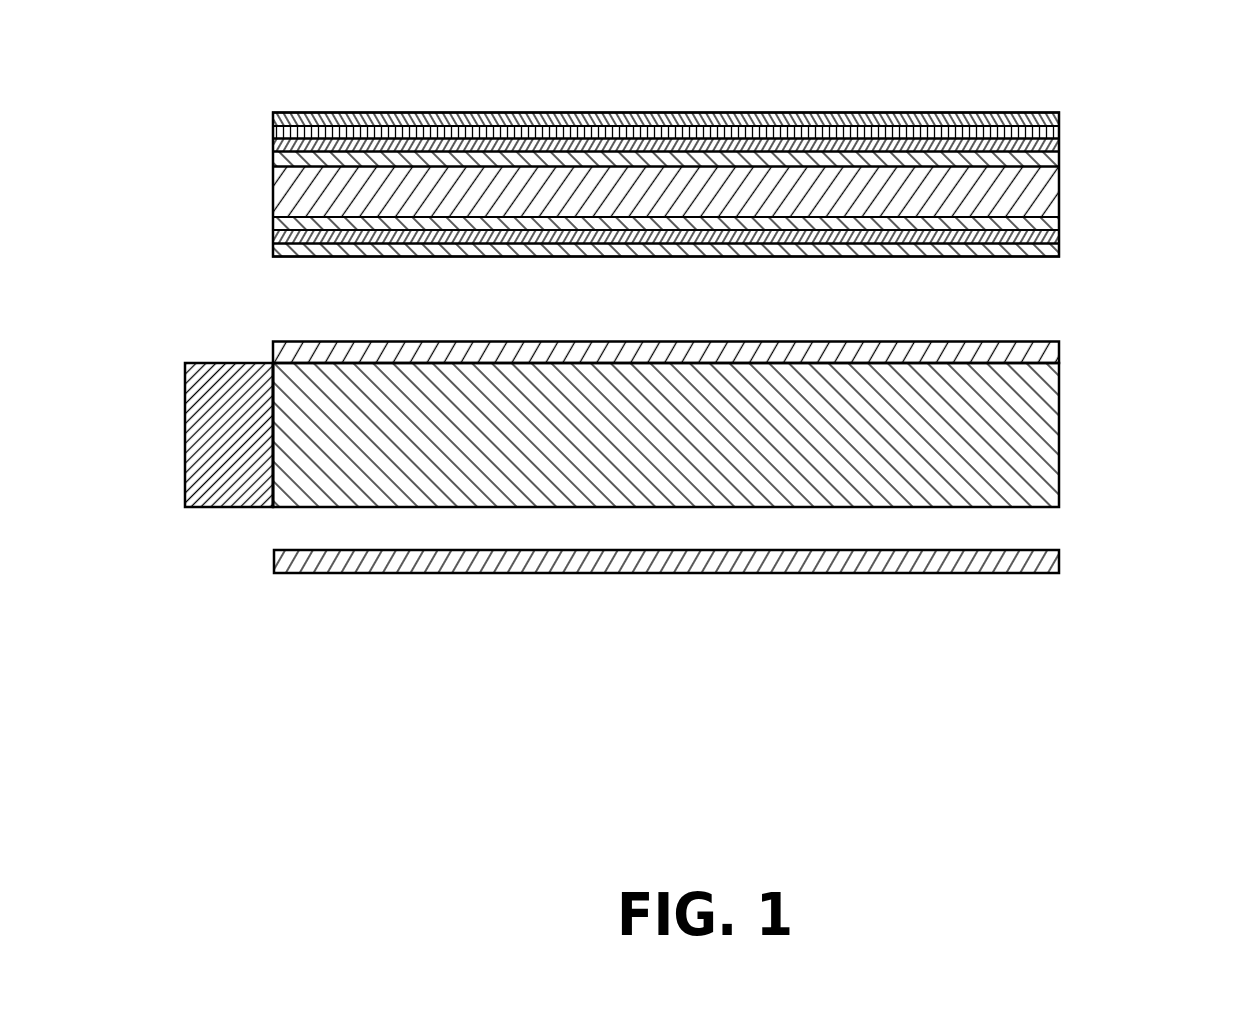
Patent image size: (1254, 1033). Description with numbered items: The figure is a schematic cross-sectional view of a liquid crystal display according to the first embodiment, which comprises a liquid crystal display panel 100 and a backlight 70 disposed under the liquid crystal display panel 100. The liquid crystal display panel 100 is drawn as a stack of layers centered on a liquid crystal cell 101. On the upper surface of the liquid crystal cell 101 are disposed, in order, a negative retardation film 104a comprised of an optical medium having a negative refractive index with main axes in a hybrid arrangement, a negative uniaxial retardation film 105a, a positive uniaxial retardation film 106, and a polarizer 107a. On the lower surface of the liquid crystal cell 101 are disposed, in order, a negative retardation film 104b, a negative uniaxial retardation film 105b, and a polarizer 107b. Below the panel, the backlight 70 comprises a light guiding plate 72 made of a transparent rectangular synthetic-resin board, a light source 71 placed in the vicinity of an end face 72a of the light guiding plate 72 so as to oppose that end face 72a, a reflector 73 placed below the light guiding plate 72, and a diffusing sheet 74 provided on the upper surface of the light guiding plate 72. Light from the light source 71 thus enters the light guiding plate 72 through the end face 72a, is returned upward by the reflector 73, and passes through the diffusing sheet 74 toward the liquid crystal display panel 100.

The liquid crystal display panel 100 is at (265, 113).
The polarizer 107a is at (1059, 120).
The positive uniaxial retardation film 106 is at (1059, 130).
The negative uniaxial retardation film 105a is at (1059, 146).
The negative retardation film 104a is at (1059, 158).
The liquid crystal cell 101 is at (1059, 190).
The negative retardation film 104b is at (1059, 225).
The negative uniaxial retardation film 105b is at (1059, 237).
The polarizer 107b is at (1059, 250).
The backlight 70 is at (235, 342).
The light source 71 is at (212, 507).
The light guiding plate 72 is at (642, 507).
The end face 72a is at (273, 442).
The reflector 73 is at (818, 573).
The diffusing sheet 74 is at (985, 342).